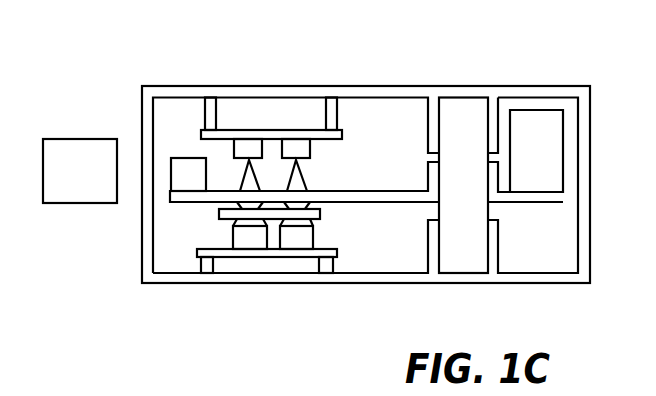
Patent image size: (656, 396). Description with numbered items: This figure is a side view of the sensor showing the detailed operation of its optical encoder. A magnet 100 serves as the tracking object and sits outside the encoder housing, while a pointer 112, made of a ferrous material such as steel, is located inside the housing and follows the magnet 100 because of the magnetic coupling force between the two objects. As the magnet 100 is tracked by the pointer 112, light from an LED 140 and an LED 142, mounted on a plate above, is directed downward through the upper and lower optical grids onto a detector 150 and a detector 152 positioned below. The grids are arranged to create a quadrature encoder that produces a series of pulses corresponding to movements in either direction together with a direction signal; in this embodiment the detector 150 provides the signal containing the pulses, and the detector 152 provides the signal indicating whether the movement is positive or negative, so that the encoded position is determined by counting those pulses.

The magnet 100 is at (79, 139).
The pointer 112 is at (188, 158).
The LED 140 is at (245, 138).
The LED 142 is at (295, 138).
The detector 150 is at (245, 242).
The detector 152 is at (293, 242).